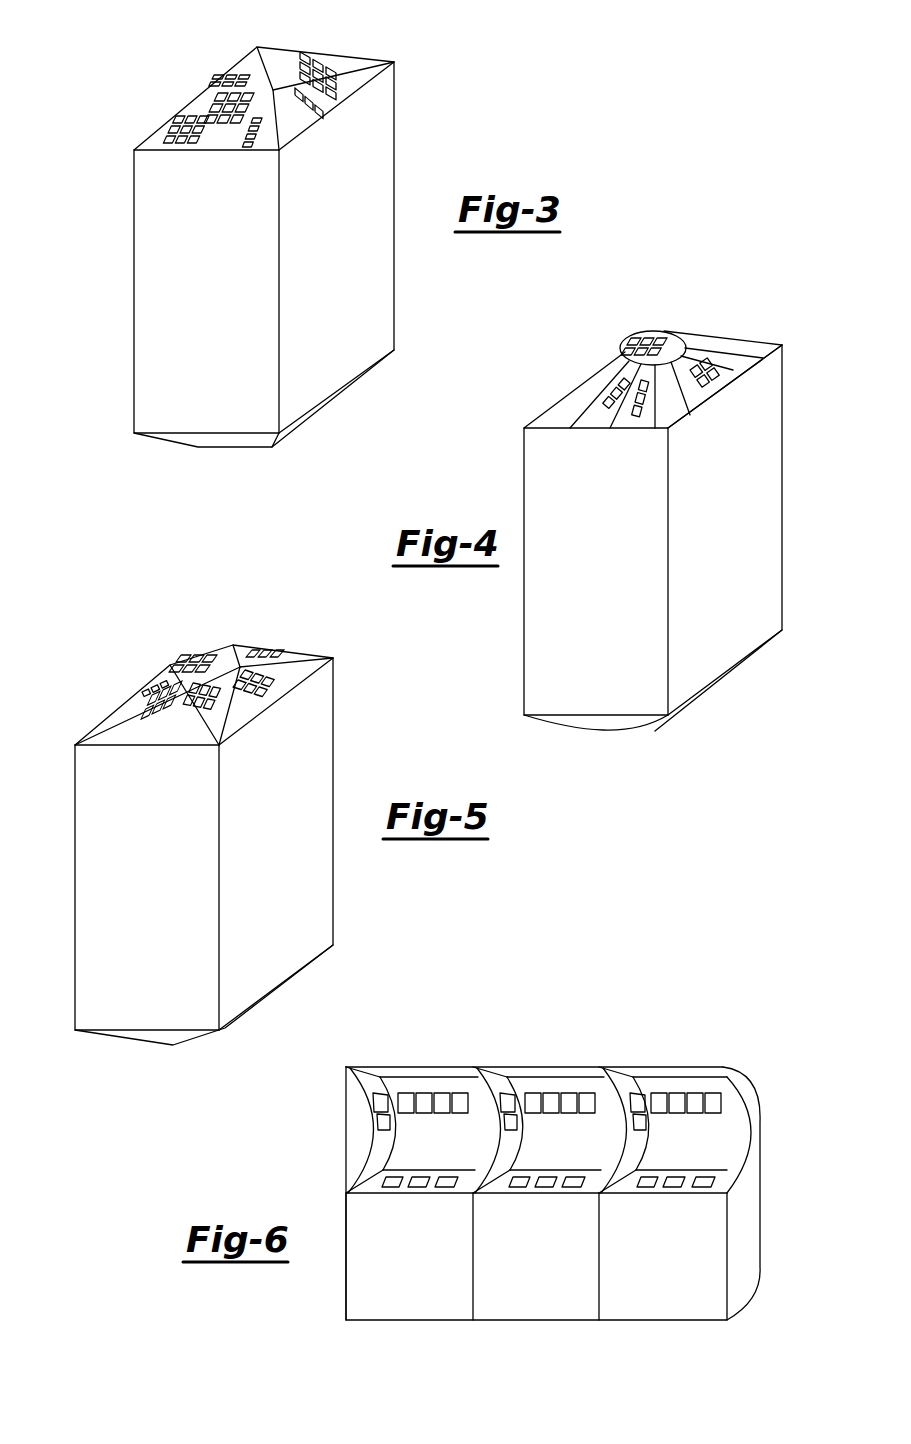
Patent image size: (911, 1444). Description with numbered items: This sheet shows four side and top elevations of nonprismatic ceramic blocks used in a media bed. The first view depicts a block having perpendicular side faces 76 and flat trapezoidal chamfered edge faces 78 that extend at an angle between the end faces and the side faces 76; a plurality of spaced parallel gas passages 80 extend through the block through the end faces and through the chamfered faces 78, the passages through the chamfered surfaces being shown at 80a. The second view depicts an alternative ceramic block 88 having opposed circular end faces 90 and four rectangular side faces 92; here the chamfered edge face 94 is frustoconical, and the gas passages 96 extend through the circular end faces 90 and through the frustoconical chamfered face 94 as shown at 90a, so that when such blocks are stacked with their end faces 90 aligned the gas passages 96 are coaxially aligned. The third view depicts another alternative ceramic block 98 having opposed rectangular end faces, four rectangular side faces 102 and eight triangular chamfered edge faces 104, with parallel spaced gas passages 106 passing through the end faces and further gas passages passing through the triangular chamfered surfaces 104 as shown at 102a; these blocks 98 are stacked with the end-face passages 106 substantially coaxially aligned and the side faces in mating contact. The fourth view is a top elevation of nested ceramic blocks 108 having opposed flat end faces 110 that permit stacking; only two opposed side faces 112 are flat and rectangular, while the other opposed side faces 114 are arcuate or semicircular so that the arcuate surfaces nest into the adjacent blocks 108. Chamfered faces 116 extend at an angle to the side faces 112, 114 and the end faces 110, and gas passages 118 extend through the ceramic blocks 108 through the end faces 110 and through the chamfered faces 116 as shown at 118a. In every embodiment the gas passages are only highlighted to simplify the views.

In FIG. 3, the side faces 76 is at (343, 217).
In FIG. 3, the chamfered edge faces 78 is at (365, 72).
In FIG. 3, the gas passages 80 is at (300, 50).
In FIG. 3, the gas passages through chamfered faces 80a is at (175, 137).
In FIG. 4, the ceramic block 88 is at (727, 312).
In FIG. 4, the circular end faces 90 is at (632, 339).
In FIG. 4, the gas passages through frustoconical chamfered face 90a is at (611, 389).
In FIG. 4, the rectangular side faces 92 is at (620, 584).
In FIG. 4, the frustoconical chamfered edge face 94 is at (757, 347).
In FIG. 4, the gas passages 96 is at (648, 331).
In FIG. 5, the ceramic block 98 is at (292, 634).
In FIG. 5, the side wall 102 is at (170, 842).
In FIG. 5, the cell group 102a is at (153, 705).
In FIG. 5, the triangular chamfered edge faces 104 is at (158, 678).
In FIG. 5, the gas passages 106 is at (210, 660).
In FIG. 6, the ceramic blocks 108 is at (544, 1190).
In FIG. 6, the flat end faces 110 is at (440, 1083).
In FIG. 6, the front face 112 is at (430, 1254).
In FIG. 6, the arcuate side faces 114 is at (355, 1142).
In FIG. 6, the chamfered faces 116 is at (370, 1082).
In FIG. 6, the gas passages 118 is at (405, 1097).
In FIG. 6, the gas passages through chamfered faces 118a is at (638, 1097).